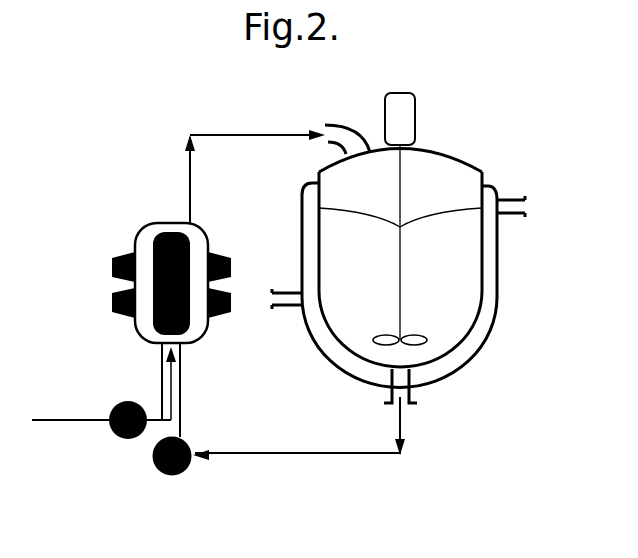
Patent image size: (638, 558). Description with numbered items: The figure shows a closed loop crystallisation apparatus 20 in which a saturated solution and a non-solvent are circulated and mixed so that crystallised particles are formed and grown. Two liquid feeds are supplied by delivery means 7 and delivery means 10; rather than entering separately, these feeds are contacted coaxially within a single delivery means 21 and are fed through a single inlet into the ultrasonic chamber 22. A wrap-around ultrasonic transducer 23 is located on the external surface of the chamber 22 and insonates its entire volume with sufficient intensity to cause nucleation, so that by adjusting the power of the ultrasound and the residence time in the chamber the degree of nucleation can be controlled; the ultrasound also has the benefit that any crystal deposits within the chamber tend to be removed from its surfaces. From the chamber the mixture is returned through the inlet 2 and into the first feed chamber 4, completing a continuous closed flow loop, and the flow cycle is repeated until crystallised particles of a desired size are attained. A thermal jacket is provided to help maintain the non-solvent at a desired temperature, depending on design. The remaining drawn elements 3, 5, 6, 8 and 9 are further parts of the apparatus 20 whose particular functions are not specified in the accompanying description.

The inlet 2 is at (260, 135).
The reactor vessel 3 is at (488, 242).
The first feed chamber 4 is at (497, 285).
The stirrer / impeller 5 is at (400, 315).
The bottom outlet 6 is at (409, 392).
The delivery means 7 is at (296, 457).
The pump 8 is at (172, 477).
The pump 9 is at (120, 437).
The delivery means 10 is at (58, 422).
The closed loop crystallisation apparatus 20 is at (140, 261).
The single delivery means 21 is at (161, 368).
The ultrasonic chamber 22 is at (155, 223).
The wrap-around ultrasonic transducer 23 is at (112, 273).